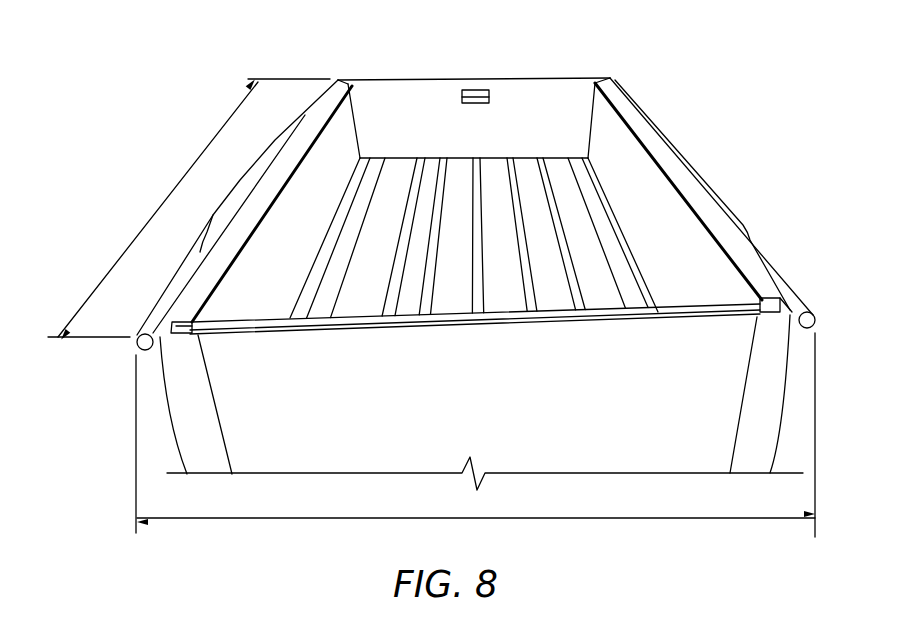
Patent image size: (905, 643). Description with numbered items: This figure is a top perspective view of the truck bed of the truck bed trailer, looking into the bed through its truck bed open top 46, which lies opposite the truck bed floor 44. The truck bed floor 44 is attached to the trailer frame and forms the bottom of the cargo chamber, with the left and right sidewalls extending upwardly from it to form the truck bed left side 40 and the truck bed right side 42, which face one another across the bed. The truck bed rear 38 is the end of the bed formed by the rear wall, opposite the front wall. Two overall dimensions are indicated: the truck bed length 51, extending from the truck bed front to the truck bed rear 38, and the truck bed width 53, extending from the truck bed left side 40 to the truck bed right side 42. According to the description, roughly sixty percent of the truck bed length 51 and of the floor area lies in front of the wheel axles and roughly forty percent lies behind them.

The truck bed rear 38 is at (475, 117).
The truck bed left side 40 is at (750, 262).
The truck bed right side 42 is at (283, 168).
The truck bed floor 44 is at (590, 233).
The truck bed open top 46 is at (575, 93).
The truck bed length 51 is at (197, 163).
The truck bed width 53 is at (625, 518).